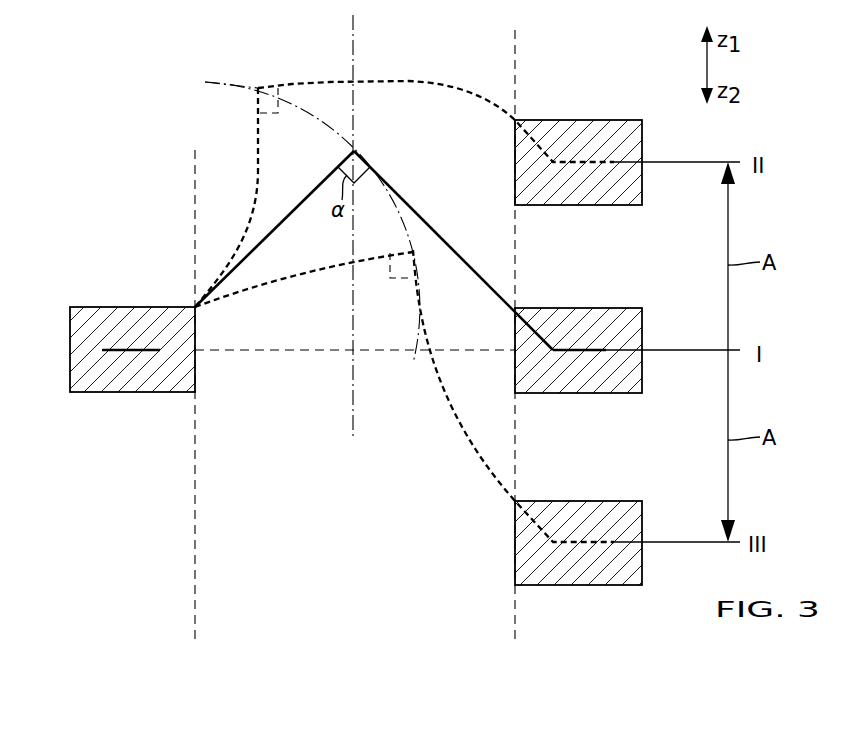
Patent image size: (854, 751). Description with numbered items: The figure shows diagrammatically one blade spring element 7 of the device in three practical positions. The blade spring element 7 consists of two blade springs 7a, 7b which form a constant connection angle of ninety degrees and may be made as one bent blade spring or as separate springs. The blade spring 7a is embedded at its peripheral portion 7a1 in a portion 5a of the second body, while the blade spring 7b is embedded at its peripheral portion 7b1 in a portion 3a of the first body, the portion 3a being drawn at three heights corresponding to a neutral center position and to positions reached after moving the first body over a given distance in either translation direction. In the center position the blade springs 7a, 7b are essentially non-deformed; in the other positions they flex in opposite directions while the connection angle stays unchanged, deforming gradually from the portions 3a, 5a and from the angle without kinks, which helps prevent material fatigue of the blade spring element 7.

The blade spring element 7 is at (266, 86).
The blade spring 7a is at (256, 162).
The blade spring 7b is at (388, 80).
The peripheral portion 7a1 is at (118, 350).
The peripheral portion 7b1 is at (590, 350).
The portion 3a is at (598, 128).
The portion 5a is at (118, 392).